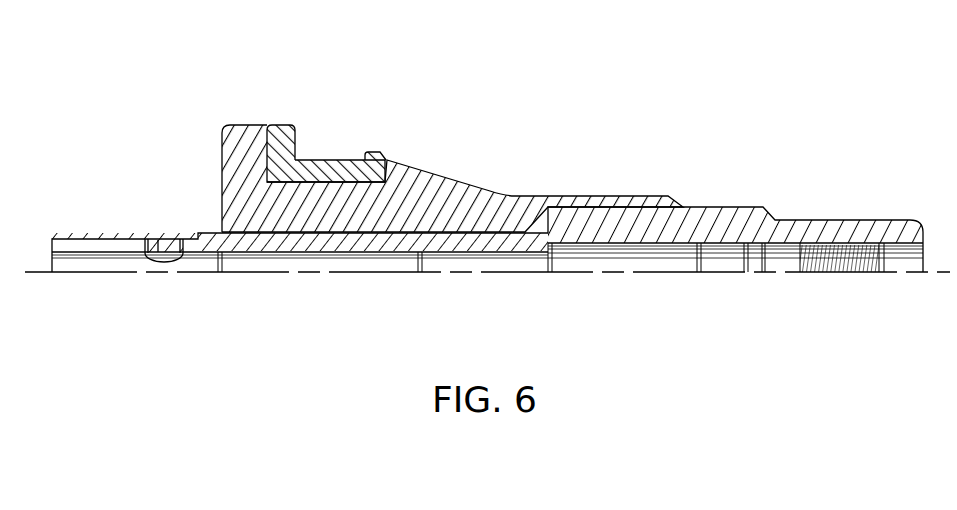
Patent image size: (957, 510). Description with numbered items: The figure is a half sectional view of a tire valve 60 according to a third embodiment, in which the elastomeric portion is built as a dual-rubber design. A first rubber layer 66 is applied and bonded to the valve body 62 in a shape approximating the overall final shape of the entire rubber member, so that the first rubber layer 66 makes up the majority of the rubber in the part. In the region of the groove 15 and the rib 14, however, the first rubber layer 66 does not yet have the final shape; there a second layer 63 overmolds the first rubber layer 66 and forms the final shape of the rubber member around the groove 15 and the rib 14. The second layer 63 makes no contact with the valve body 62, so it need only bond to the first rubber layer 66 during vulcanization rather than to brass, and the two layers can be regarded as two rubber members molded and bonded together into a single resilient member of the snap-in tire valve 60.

The tire valve 60 is at (552, 160).
The valve body 62 is at (703, 220).
The second layer 63 is at (282, 138).
The first rubber layer 66 is at (433, 188).
The groove 15 is at (325, 158).
The rib 14 is at (373, 155).